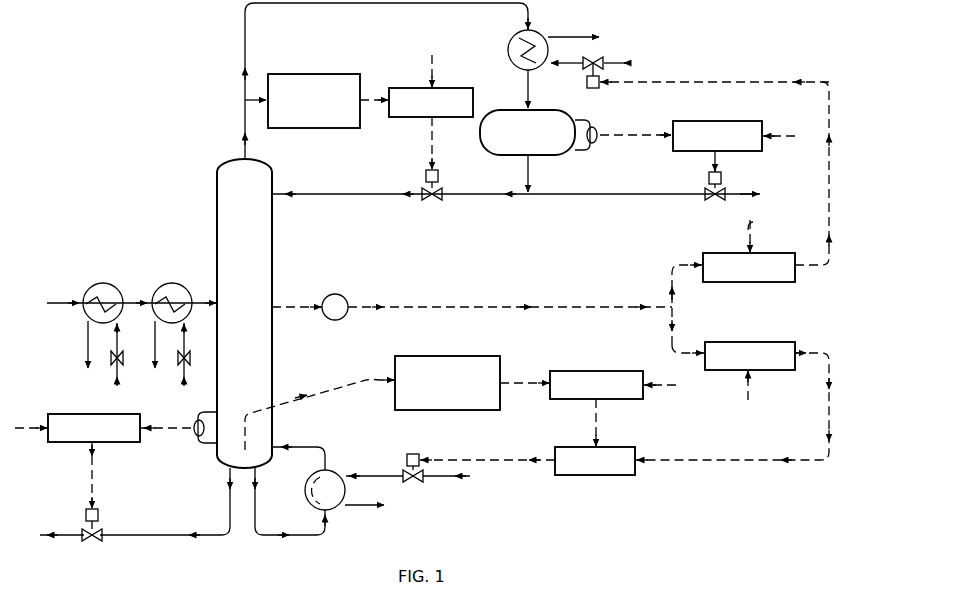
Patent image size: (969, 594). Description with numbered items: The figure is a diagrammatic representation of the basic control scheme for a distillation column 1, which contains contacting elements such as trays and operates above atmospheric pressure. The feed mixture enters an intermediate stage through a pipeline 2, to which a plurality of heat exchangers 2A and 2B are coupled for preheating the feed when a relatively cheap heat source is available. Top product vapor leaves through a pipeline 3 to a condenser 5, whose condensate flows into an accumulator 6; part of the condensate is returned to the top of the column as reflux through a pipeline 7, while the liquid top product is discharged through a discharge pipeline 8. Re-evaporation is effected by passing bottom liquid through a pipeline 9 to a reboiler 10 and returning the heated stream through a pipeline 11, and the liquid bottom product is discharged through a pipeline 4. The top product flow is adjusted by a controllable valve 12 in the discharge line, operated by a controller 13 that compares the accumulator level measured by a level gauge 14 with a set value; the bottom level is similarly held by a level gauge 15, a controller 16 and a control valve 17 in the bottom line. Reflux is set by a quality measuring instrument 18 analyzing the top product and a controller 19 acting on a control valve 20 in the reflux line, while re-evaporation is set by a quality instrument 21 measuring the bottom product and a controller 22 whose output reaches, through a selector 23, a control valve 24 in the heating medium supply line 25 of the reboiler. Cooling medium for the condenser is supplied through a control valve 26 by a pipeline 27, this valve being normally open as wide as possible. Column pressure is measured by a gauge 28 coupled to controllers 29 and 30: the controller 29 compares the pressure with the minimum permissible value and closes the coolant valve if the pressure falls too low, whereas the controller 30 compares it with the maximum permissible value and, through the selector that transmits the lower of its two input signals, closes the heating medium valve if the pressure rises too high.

The distillation column 1 is at (250, 316).
The feed pipeline 2 is at (192, 303).
The heat exchanger 2A is at (97, 286).
The heat exchanger 2B is at (166, 286).
The top product discharge pipeline 3 is at (245, 45).
The bottom product pipeline 4 is at (226, 514).
The condenser 5 is at (516, 38).
The accumulator 6 is at (545, 157).
The reflux pipeline 7 is at (318, 194).
The discharge pipeline 8 is at (733, 194).
The reboiler feed pipeline 9 is at (258, 510).
The reboiler 10 is at (335, 472).
The return pipeline 11 is at (315, 447).
The controllable valve 12 is at (713, 200).
The controller 13 is at (724, 121).
The level gauge 14 is at (598, 140).
The level gauge 15 is at (196, 422).
The controller 16 is at (84, 414).
The control valve 17 is at (100, 540).
The quality measuring instrument 18 is at (326, 74).
The controller 19 is at (441, 88).
The control valve 20 is at (430, 200).
The quality instrument 21 is at (446, 356).
The controller 22 is at (599, 371).
The selector 23 is at (611, 447).
The control valve 24 is at (405, 470).
The heating medium supply line 25 is at (458, 479).
The control valve 26 is at (595, 57).
The cooling medium pipeline 27 is at (630, 63).
The pressure gauge 28 is at (340, 295).
The controller 29 is at (756, 253).
The controller 30 is at (761, 342).